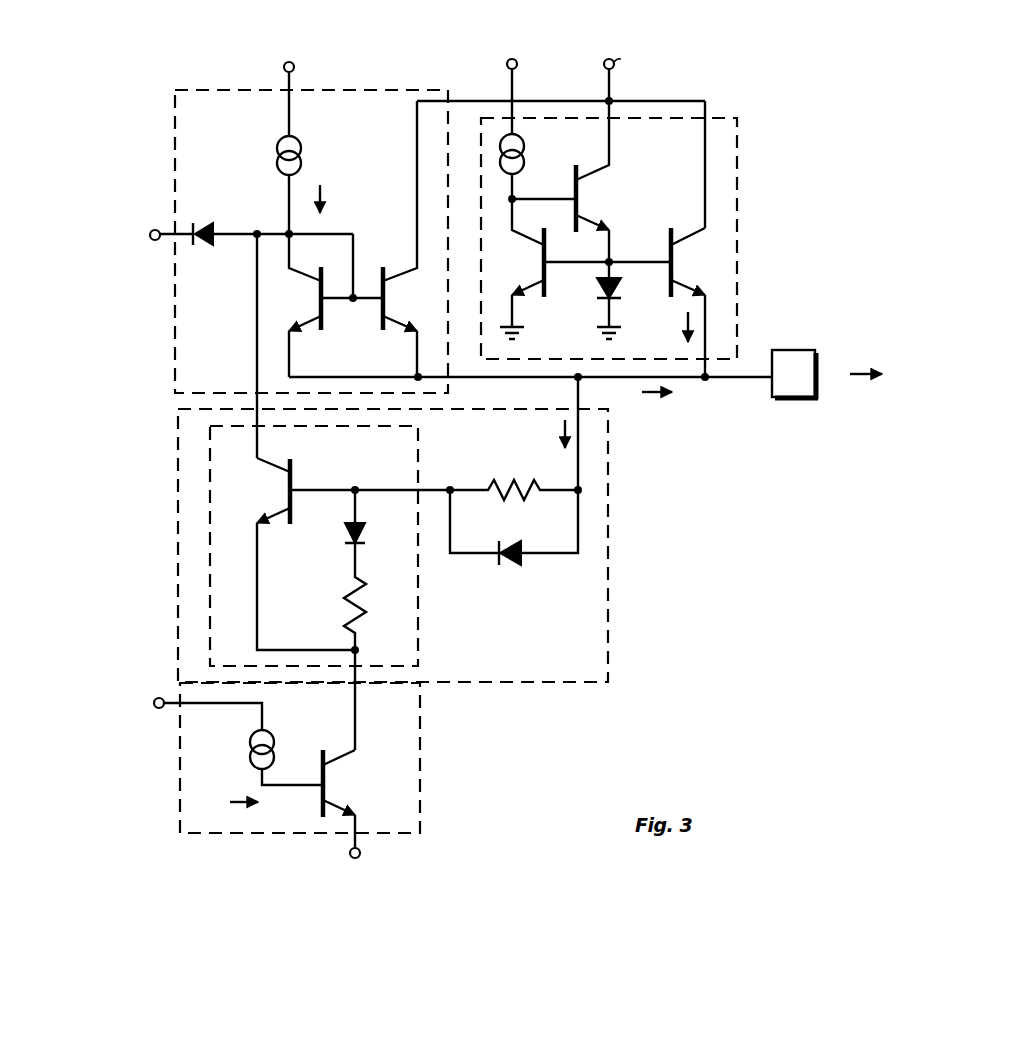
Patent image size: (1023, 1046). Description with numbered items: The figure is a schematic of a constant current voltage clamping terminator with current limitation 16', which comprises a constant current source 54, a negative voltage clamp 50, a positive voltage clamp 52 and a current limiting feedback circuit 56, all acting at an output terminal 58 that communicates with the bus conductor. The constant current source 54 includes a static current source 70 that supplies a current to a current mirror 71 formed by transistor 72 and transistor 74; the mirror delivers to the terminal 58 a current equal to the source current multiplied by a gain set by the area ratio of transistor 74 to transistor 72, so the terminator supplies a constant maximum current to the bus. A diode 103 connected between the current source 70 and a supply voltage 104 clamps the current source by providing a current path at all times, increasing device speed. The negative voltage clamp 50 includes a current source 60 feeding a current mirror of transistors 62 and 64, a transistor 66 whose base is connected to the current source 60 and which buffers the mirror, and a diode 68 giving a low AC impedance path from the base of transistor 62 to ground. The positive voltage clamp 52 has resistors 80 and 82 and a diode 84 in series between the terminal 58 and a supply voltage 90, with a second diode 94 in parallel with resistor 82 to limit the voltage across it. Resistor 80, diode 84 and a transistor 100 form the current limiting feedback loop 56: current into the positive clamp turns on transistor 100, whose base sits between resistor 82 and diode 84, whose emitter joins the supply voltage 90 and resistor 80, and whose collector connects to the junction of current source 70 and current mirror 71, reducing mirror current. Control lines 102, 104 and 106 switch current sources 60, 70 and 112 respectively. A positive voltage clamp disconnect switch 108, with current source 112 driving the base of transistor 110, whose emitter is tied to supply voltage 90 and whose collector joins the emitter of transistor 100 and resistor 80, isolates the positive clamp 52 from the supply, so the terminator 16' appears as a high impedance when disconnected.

The constant current voltage clamping terminator with current limitation 16' is at (531, 462).
The negative voltage clamp 50 is at (740, 168).
The positive voltage clamp 52 is at (612, 608).
The constant current source 54 is at (406, 89).
The current limiting feedback circuit 56 is at (402, 594).
The terminal 58 is at (790, 350).
The current source 60 is at (522, 143).
The transistor 62 is at (681, 262).
The transistor 64 is at (537, 264).
The transistor 66 is at (586, 198).
The diode 68 is at (620, 288).
The static current source 70 is at (300, 147).
The current mirror 71 is at (368, 258).
The transistor 72 is at (313, 299).
The transistor 74 is at (393, 300).
The resistor 80 is at (362, 616).
The resistor 82 is at (498, 482).
The diode 84 is at (363, 530).
The supply voltage 90 is at (350, 855).
The second diode 94 is at (509, 566).
The transistor 100 is at (282, 497).
The control line 102 is at (517, 64).
The diode 103 is at (206, 231).
The supply voltage / control line 104 is at (294, 67).
The control line 106 is at (154, 698).
The positive voltage clamp disconnect switch 108 is at (393, 766).
The transistor 110 is at (333, 786).
The current source 112 is at (250, 743).